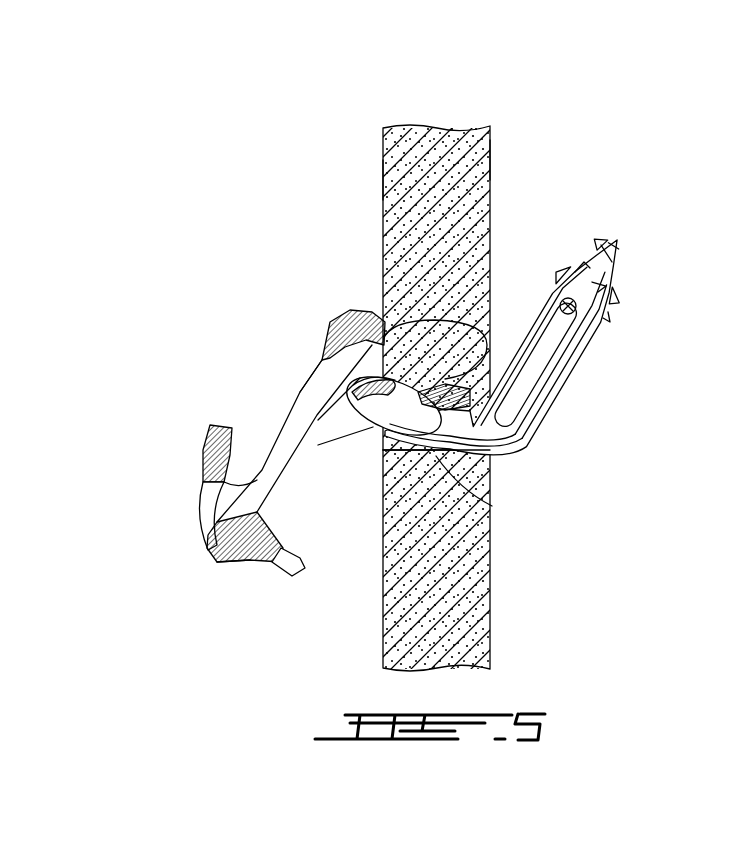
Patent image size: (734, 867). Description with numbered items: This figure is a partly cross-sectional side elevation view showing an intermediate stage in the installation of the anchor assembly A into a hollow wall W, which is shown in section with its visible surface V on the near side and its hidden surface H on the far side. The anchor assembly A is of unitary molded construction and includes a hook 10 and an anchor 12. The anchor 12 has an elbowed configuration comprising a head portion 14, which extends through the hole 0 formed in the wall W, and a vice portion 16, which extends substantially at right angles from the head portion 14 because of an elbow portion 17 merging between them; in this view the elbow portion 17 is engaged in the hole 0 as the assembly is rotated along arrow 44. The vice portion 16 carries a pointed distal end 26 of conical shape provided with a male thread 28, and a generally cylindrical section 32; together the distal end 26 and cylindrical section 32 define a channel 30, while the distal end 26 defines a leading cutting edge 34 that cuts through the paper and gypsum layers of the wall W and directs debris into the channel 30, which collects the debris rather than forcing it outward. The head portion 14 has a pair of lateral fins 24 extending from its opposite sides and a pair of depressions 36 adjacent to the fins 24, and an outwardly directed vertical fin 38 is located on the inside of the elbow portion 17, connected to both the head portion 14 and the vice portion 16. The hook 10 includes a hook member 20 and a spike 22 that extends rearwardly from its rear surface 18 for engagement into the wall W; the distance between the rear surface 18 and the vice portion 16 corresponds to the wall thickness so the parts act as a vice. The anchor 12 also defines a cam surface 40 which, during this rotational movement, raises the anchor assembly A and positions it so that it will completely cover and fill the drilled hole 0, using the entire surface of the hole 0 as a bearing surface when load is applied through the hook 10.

The hook 10 is at (272, 438).
The anchor 12 is at (568, 368).
The head portion 14 is at (383, 322).
The vice portion 16 is at (606, 306).
The elbow portion 17 is at (504, 443).
The rear surface 18 is at (268, 500).
The hook member 20 is at (210, 432).
The spike 22 is at (303, 577).
The lateral fins 24 is at (368, 430).
The pointed distal end 26 is at (622, 238).
The male thread 28 is at (572, 268).
The channel 30 is at (550, 292).
The cylindrical section 32 is at (535, 400).
The leading cutting edge 34 is at (606, 284).
The depressions 36 is at (318, 358).
The vertical fin 38 is at (392, 325).
The cam surface 40 is at (492, 506).
The arrow 44 is at (268, 647).
The hole 0 is at (490, 455).
The anchor assembly A is at (205, 311).
The hidden surface H is at (494, 152).
The visible surface V is at (377, 170).
The wall W is at (496, 612).